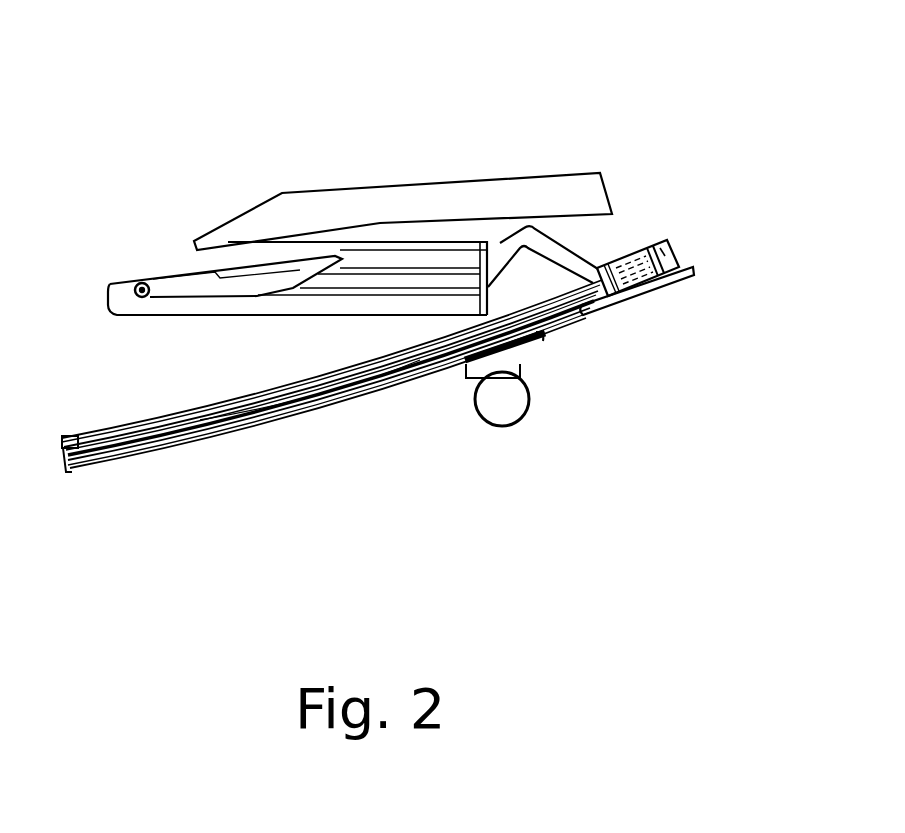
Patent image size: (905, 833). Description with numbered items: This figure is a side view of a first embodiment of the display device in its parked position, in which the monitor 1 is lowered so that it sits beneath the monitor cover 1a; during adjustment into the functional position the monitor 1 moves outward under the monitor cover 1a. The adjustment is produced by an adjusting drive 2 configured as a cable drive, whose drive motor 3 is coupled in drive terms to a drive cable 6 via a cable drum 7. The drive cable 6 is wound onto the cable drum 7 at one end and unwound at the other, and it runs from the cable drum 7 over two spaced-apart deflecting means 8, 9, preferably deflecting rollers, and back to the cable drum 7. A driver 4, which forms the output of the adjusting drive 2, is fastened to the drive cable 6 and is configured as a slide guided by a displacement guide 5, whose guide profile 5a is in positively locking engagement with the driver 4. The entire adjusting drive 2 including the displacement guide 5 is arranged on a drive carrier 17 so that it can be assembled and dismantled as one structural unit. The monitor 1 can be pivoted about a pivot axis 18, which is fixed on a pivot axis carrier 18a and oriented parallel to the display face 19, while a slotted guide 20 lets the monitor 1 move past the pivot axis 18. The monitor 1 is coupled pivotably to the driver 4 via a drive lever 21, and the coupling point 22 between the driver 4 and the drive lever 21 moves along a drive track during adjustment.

The monitor 1 is at (433, 258).
The monitor cover 1a is at (355, 212).
The adjusting drive 2 is at (578, 358).
The drive motor 3 is at (517, 407).
The driver 4 is at (630, 258).
The displacement guide 5 is at (192, 408).
The guide profile 5a is at (131, 428).
The drive cable 6 is at (117, 462).
The cable drum 7 is at (459, 390).
The deflecting means 8 is at (671, 298).
The deflecting means 9 is at (80, 474).
The drive carrier 17 is at (363, 403).
The pivot axis 18 is at (140, 287).
The pivot axis carrier 18a is at (263, 283).
The display face 19 is at (260, 316).
The slotted guide 20 is at (390, 287).
The drive lever 21 is at (574, 258).
The coupling point 22 is at (645, 258).